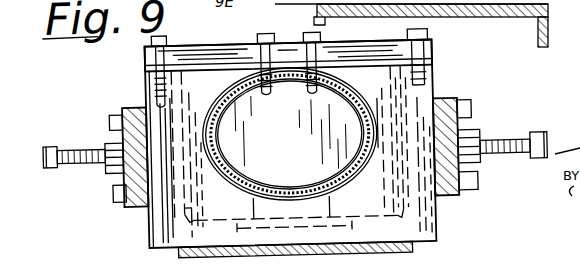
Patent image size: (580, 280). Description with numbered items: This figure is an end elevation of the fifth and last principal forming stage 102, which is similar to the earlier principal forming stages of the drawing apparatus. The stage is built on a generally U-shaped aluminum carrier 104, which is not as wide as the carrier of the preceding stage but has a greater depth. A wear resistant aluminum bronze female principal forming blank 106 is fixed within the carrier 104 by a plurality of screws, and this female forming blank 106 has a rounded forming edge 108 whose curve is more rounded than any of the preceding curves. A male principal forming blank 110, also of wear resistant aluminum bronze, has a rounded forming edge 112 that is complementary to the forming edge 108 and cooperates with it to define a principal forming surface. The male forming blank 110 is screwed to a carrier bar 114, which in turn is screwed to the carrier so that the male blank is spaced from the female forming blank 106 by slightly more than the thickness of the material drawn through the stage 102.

The fifth principal forming stage 102 is at (438, 84).
The carrier 104 is at (423, 228).
The female principal forming blank 106 is at (186, 206).
The rounded forming edge 108 is at (349, 182).
The male principal forming blank 110 is at (338, 111).
The rounded forming edge 112 is at (227, 174).
The carrier bar 114 is at (432, 52).